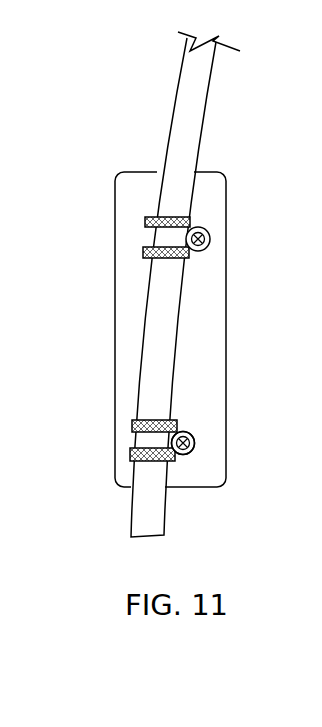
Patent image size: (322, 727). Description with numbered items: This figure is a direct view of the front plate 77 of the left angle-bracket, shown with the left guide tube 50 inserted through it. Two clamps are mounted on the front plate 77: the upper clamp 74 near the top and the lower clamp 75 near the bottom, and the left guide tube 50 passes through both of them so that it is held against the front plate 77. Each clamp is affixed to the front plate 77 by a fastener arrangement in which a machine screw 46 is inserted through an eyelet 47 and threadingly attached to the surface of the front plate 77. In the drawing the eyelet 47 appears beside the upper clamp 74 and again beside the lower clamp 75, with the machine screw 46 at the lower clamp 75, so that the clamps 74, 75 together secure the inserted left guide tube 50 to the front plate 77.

The left guide tube 50 is at (172, 103).
The upper clamp 74 is at (145, 236).
The lower clamp 75 is at (133, 440).
The front plate 77 is at (197, 342).
The machine screw 46 is at (195, 435).
The eyelet 47 is at (210, 228).